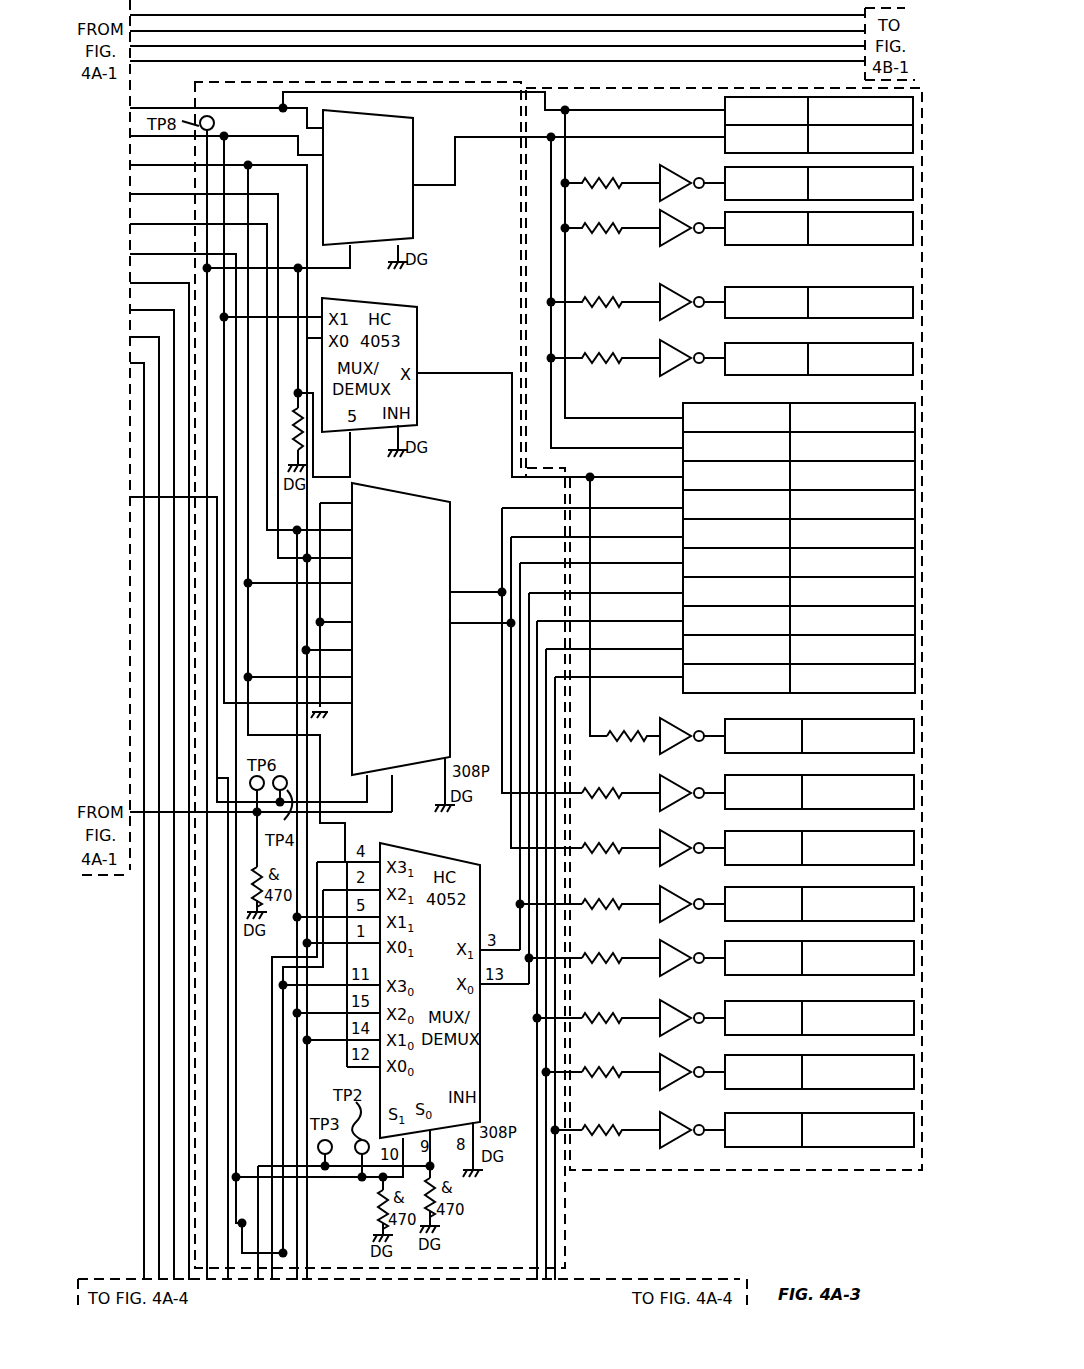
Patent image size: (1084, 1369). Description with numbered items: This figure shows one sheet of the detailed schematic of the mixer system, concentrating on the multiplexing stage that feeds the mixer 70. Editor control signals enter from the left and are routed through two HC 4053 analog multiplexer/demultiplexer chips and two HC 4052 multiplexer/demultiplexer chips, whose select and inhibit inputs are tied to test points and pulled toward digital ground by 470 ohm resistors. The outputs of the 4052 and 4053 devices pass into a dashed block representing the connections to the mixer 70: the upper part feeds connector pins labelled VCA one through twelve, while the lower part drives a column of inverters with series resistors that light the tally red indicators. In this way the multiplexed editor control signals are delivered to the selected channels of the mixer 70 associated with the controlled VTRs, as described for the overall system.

The mixer 70 is at (875, 1170).
The HC4053 analog multiplexer/demultiplexer 4053 is at (368, 177).
The HC4052 analog multiplexer/demultiplexer 4052 is at (399, 642).
The 470 ohm pull-down resistor 470 is at (304, 432).